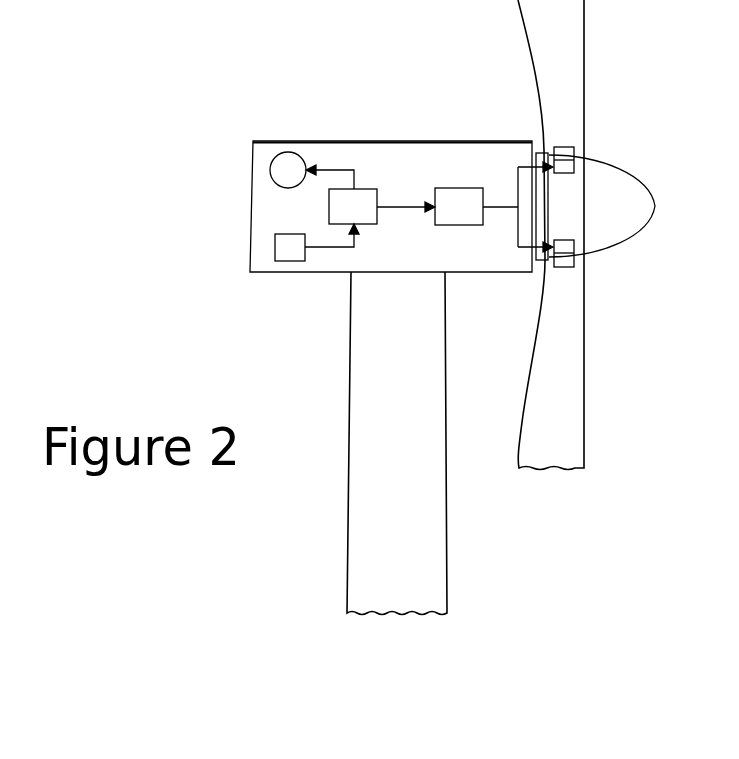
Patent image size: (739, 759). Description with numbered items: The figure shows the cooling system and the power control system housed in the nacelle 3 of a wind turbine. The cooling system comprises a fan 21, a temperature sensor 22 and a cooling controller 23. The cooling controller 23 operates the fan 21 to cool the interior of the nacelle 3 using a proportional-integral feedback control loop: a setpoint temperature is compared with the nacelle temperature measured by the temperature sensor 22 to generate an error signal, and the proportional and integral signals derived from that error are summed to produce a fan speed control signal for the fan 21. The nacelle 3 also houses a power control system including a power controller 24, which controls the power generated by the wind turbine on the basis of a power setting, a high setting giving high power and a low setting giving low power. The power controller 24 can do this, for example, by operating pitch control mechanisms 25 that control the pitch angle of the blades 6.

The nacelle 3 is at (373, 152).
The blades 6 is at (578, 345).
The fan 21 is at (287, 157).
The temperature sensor 22 is at (287, 253).
The cooling controller 23 is at (372, 218).
The power controller 24 is at (452, 197).
The pitch control mechanisms 25 is at (572, 168).